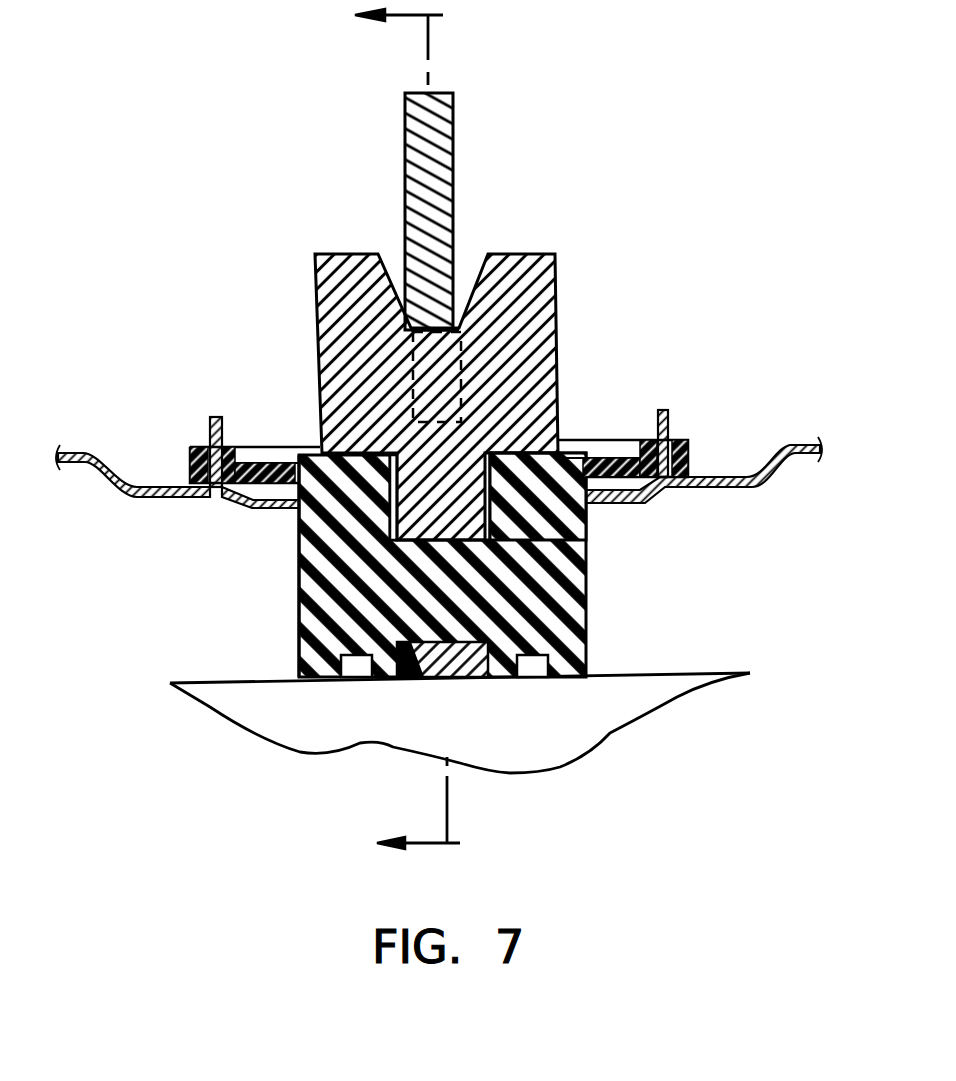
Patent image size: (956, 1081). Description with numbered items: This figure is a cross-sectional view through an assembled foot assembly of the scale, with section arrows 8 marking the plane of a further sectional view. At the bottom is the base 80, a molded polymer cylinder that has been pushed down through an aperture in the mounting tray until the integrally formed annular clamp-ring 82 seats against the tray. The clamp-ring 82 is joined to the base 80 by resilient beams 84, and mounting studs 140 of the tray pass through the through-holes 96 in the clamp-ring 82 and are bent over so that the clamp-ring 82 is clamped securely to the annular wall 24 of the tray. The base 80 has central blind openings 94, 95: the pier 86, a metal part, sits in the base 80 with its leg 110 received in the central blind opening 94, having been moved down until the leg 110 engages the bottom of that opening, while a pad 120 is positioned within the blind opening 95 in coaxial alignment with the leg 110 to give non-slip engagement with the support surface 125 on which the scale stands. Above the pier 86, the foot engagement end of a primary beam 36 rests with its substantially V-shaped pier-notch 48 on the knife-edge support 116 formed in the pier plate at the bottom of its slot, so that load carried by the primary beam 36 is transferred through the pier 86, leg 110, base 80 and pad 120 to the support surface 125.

The section line 8- 8 is at (423, 432).
The annular wall 24 is at (773, 458).
The primary beam 36 is at (455, 132).
The pier-notch 48 is at (413, 377).
The base 80 is at (600, 620).
The annular clamp-ring 82 is at (607, 447).
The resilient beams 84 is at (273, 457).
The pier 86 is at (585, 307).
The central blind opening 94 is at (299, 526).
The central blind opening 95 is at (477, 683).
The through-holes 96 is at (665, 445).
The leg 110 is at (392, 522).
The knife-edge support 116 is at (456, 300).
The pad 120 is at (413, 683).
The support surface 125 is at (675, 693).
The mounting studs 140 is at (213, 417).